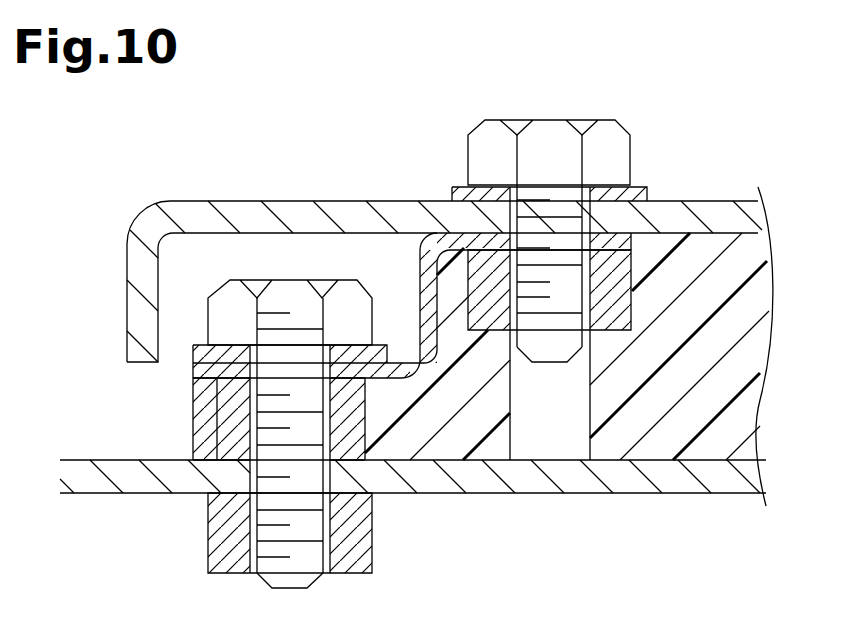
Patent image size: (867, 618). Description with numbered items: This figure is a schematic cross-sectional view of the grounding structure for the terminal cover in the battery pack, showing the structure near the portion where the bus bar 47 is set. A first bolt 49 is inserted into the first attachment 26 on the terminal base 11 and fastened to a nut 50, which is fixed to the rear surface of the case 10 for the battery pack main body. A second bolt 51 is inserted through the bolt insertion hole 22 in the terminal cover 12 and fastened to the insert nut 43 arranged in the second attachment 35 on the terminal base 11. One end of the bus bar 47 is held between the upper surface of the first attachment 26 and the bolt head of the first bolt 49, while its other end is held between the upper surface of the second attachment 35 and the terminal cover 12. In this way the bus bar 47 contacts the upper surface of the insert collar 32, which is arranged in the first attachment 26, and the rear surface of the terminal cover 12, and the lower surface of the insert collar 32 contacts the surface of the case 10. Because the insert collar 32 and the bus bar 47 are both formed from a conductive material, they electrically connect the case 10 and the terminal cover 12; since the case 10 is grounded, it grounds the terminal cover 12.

The case 10 is at (93, 486).
The terminal base 11 is at (752, 350).
The terminal cover 12 is at (300, 215).
The bolt insertion hole 22 is at (588, 228).
The first attachment 26 is at (245, 397).
The insert collar 32 is at (228, 437).
The second attachment 35 is at (577, 348).
The insert nut 43 is at (622, 290).
The bus bar 47 is at (420, 272).
The first bolt 49 is at (235, 291).
The nut 50 is at (372, 526).
The second bolt 51 is at (478, 155).